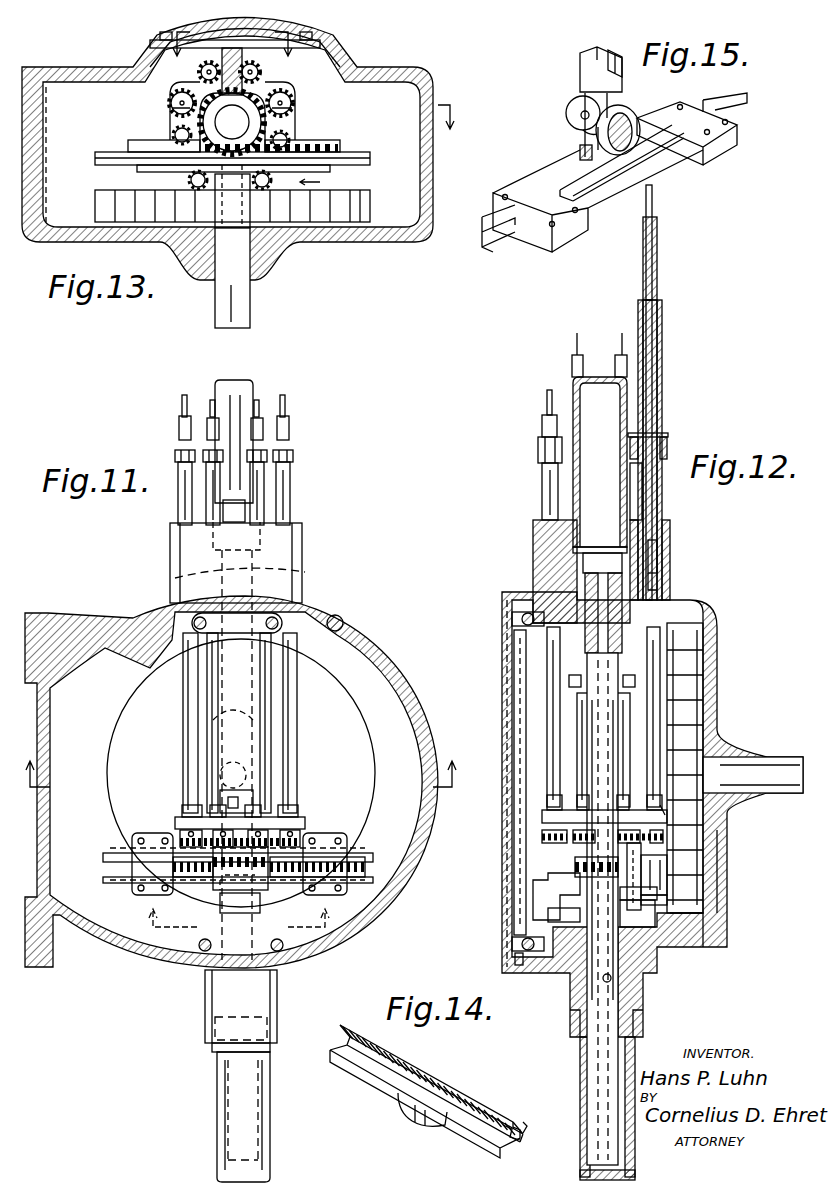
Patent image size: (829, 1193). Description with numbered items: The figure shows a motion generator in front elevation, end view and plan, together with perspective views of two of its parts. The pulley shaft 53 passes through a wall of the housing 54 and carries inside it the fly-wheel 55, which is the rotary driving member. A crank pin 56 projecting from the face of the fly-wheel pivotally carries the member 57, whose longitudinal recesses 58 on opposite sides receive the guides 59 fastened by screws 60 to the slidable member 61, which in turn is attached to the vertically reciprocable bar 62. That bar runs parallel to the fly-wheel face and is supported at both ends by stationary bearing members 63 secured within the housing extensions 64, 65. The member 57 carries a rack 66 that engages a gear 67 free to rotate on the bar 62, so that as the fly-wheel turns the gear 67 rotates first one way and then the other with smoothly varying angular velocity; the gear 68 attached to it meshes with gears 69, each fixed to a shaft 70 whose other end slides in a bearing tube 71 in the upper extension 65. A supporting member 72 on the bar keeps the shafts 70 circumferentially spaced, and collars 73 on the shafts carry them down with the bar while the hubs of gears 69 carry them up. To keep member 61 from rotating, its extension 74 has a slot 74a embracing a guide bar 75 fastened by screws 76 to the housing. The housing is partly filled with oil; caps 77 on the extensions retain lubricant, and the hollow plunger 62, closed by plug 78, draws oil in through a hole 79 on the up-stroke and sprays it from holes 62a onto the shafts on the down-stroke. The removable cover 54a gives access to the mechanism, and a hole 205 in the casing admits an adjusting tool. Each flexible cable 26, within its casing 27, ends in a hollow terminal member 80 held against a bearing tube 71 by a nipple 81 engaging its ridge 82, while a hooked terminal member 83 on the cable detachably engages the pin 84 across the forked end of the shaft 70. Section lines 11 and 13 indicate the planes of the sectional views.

In FIG. 13, the section line 11- 11 is at (313, 90).
In FIG. 11, the section line 13- 13 is at (240, 836).
In FIG. 15, the flexible cable 26 is at (652, 205).
In FIG. 11, the flexible cable 26 is at (200, 405).
In FIG. 12, the flexible cable 26 is at (622, 333).
In FIG. 15, the flexible housing 27 is at (657, 228).
In FIG. 12, the flexible housing 27 is at (650, 450).
In FIG. 13, the pulley shaft 53 is at (250, 298).
In FIG. 12, the pulley shaft 53 is at (760, 760).
In FIG. 13, the housing 54 is at (76, 68).
In FIG. 11, the housing 54 is at (118, 652).
In FIG. 12, the housing 54 is at (717, 680).
In FIG. 13, the cover 54a is at (135, 52).
In FIG. 12, the cover 54a is at (510, 680).
In FIG. 13, the fly-wheel 55 is at (95, 206).
In FIG. 11, the fly-wheel 55 is at (115, 728).
In FIG. 12, the fly-wheel 55 is at (692, 653).
In FIG. 13, the crank pin 56 is at (215, 205).
In FIG. 12, the crank pin 56 is at (727, 856).
In FIG. 13, the member 57 is at (137, 169).
In FIG. 14, the member 57 is at (398, 1095).
In FIG. 12, the member 57 is at (703, 892).
In FIG. 14, the recesses 58 is at (522, 1126).
In FIG. 13, the guides 59 is at (95, 156).
In FIG. 15, the guides 59 is at (500, 240).
In FIG. 11, the guides 59 is at (103, 860).
In FIG. 12, the guides 59 is at (641, 852).
In FIG. 12, the screws 60 is at (712, 948).
In FIG. 13, the member 61 is at (130, 146).
In FIG. 15, the member 61 is at (548, 177).
In FIG. 11, the member 61 is at (135, 900).
In FIG. 12, the member 61 is at (650, 955).
In FIG. 13, the reciprocable bar 62 is at (232, 122).
In FIG. 11, the reciprocable bar 62 is at (305, 574).
In FIG. 12, the reciprocable bar 62 is at (590, 660).
In FIG. 12, the holes 62a is at (604, 686).
In FIG. 12, the bearing members 63 is at (583, 565).
In FIG. 11, the extension 64 is at (277, 985).
In FIG. 12, the extension 64 is at (570, 1025).
In FIG. 11, the extension 65 is at (170, 550).
In FIG. 12, the extension 65 is at (533, 532).
In FIG. 11, the rack 66 is at (173, 866).
In FIG. 14, the rack 66 is at (340, 1027).
In FIG. 12, the rack 66 is at (669, 875).
In FIG. 13, the gear 67 is at (205, 147).
In FIG. 11, the gear 67 is at (222, 885).
In FIG. 12, the gear 67 is at (583, 866).
In FIG. 13, the gear 68 is at (172, 118).
In FIG. 11, the gear 68 is at (180, 820).
In FIG. 12, the gear 68 is at (542, 818).
In FIG. 13, the gears 69 is at (200, 72).
In FIG. 11, the gears 69 is at (180, 838).
In FIG. 12, the gears 69 is at (542, 836).
In FIG. 13, the shafts 70 is at (207, 68).
In FIG. 11, the shafts 70 is at (183, 645).
In FIG. 12, the shafts 70 is at (547, 720).
In FIG. 11, the bearing tube 71 is at (206, 492).
In FIG. 12, the bearing tube 71 is at (542, 480).
In FIG. 13, the supporting member 72 is at (168, 105).
In FIG. 11, the supporting member 72 is at (182, 808).
In FIG. 12, the supporting member 72 is at (665, 812).
In FIG. 11, the thrust members 73 is at (190, 805).
In FIG. 12, the thrust members 73 is at (547, 800).
In FIG. 13, the extension 74 is at (240, 90).
In FIG. 15, the extension 74 is at (580, 82).
In FIG. 12, the extension 74 is at (533, 893).
In FIG. 15, the slot 74a is at (622, 72).
In FIG. 13, the guide bar 75 is at (255, 67).
In FIG. 11, the guide bar 75 is at (248, 708).
In FIG. 12, the guide bar 75 is at (514, 650).
In FIG. 13, the screws 76 is at (160, 36).
In FIG. 11, the screws 76 is at (194, 615).
In FIG. 12, the screws 76 is at (512, 620).
In FIG. 11, the caps 77 is at (240, 385).
In FIG. 12, the caps 77 is at (575, 395).
In FIG. 12, the plug 78 is at (602, 563).
In FIG. 12, the hole 79 is at (617, 982).
In FIG. 11, the terminal member 80 is at (178, 425).
In FIG. 12, the terminal member 80 is at (662, 332).
In FIG. 11, the nipple 81 is at (175, 454).
In FIG. 12, the nipple 81 is at (538, 452).
In FIG. 12, the ridge 82 is at (668, 434).
In FIG. 12, the terminal member 83 is at (657, 566).
In FIG. 12, the pin 84 is at (657, 586).
In FIG. 11, the hole 205 is at (343, 620).